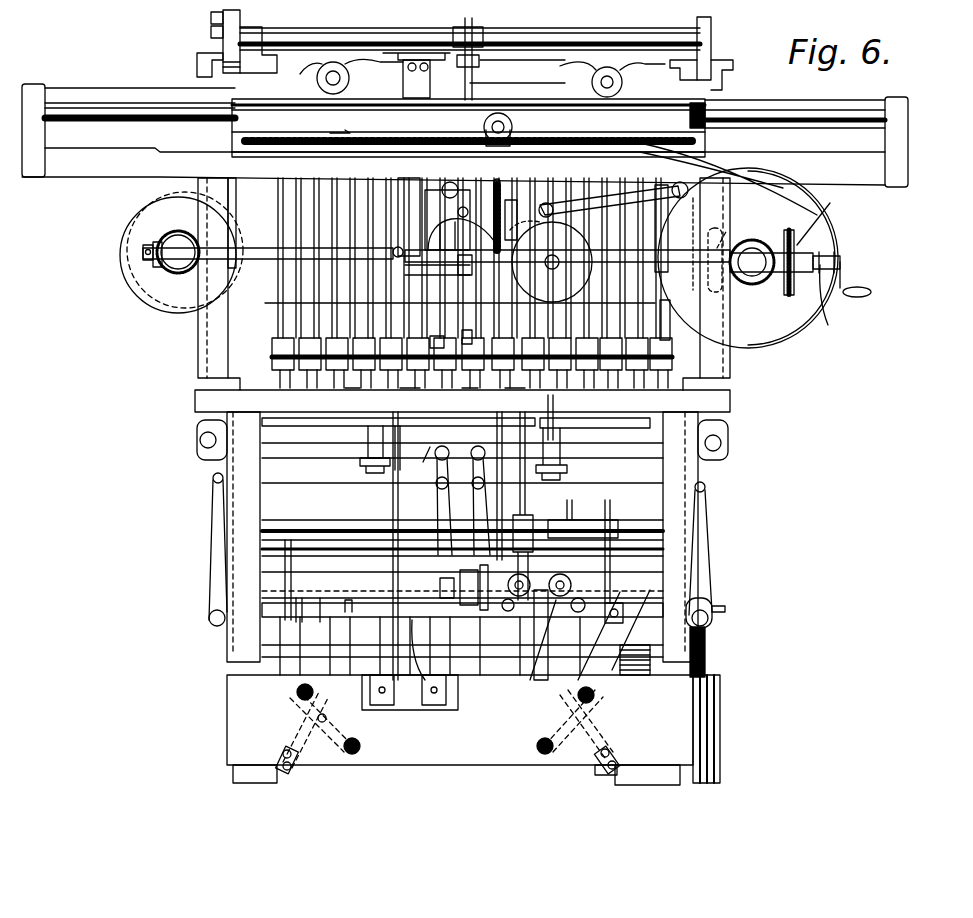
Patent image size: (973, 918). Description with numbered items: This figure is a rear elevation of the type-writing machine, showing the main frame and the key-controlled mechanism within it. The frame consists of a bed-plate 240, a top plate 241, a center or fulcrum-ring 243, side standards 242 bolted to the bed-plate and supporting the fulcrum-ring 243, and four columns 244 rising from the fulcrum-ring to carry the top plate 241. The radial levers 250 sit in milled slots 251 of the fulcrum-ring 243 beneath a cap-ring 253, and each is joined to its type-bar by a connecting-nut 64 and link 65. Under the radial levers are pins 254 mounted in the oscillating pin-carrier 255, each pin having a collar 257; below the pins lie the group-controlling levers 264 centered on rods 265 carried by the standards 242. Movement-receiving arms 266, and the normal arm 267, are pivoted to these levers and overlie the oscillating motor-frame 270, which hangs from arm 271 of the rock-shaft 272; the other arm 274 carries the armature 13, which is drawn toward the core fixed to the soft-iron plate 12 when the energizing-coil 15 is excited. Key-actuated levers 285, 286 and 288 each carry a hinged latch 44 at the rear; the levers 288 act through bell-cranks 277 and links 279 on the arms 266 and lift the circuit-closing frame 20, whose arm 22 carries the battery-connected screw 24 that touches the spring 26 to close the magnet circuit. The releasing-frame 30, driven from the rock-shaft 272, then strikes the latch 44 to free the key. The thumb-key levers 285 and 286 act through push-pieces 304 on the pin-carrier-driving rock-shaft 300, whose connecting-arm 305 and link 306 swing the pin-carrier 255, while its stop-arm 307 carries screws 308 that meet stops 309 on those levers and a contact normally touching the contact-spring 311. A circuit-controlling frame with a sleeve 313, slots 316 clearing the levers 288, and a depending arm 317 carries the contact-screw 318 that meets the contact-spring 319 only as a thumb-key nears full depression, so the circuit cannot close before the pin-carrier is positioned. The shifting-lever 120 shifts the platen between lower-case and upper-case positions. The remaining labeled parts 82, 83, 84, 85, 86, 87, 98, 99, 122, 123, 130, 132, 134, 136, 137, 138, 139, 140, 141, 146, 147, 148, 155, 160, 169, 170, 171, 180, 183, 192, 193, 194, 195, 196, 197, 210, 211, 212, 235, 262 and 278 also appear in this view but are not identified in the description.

The soft-iron plate 12 is at (722, 776).
The armature 13 is at (725, 610).
The energizing-coil 15 is at (706, 668).
The circuit-closing frame 20 is at (350, 604).
The arm 22 is at (308, 608).
The battery-connected screw 24 is at (295, 702).
The spring 26 is at (340, 727).
The releasing-frame 30 is at (293, 553).
The latch 44 is at (314, 692).
The connecting-nut 64 is at (272, 350).
The link 65 is at (302, 304).
The platen post 82 is at (226, 30).
The platen 83 is at (354, 30).
The bracket 84 is at (418, 52).
The carriage rail 85 is at (86, 102).
The rail end block 86 is at (36, 88).
The roller 87 is at (333, 71).
The post 98 is at (242, 20).
The clamp 99 is at (211, 17).
The shifting-lever 120 is at (465, 27).
The rod 122 is at (472, 88).
The rod 123 is at (488, 58).
The escapement frame 130 is at (450, 185).
The lever 132 is at (416, 200).
The roller 134 is at (472, 148).
The dog 136 is at (500, 210).
The rocker 137 is at (432, 214).
The wheel 138 is at (528, 263).
The carriage rail 139 is at (268, 116).
The rack 140 is at (318, 193).
The lever 141 is at (542, 202).
The pawl 146 is at (520, 238).
The block 147 is at (467, 262).
The bar 148 is at (448, 262).
The spring 155 is at (497, 186).
The post 160 is at (668, 340).
The wheel 169 is at (810, 340).
The band 170 is at (706, 160).
The block 171 is at (403, 86).
The wheel 180 is at (160, 308).
The dashed circle 183 is at (178, 190).
The bracket 192 is at (740, 228).
The gear 193 is at (786, 230).
The shaft 194 is at (264, 260).
The post 195 is at (238, 195).
The collar 196 is at (148, 258).
The arm 197 is at (706, 282).
The arm 210 is at (816, 220).
The gear 211 is at (778, 285).
The crank 212 is at (820, 300).
The gear 235 is at (178, 268).
The bed-plate 240 is at (246, 710).
The top plate 241 is at (56, 172).
The side standards 242 is at (240, 472).
The fulcrum-ring 243 is at (216, 400).
The columns 244 is at (210, 352).
The radial levers 250 is at (408, 390).
The milled slots 251 is at (466, 390).
The cap-ring 253 is at (436, 336).
The pins 254 is at (430, 447).
The pin-carrier 255 is at (552, 438).
The collars 257 is at (390, 430).
The pawl 262 is at (466, 330).
The group-controlling levers 264 is at (328, 446).
The rods 265 is at (200, 443).
The movement-receiving arms 266 is at (478, 500).
The movement-receiving arm 267 is at (440, 506).
The oscillating frame 270 is at (462, 575).
The arm 271 is at (456, 586).
The rock-shaft 272 is at (268, 578).
The arm 274 is at (623, 612).
The bell-crank 277 is at (212, 540).
The pivot 278 is at (212, 620).
The links 279 is at (298, 494).
The key-actuated lever 285 is at (500, 680).
The key-actuated lever 286 is at (540, 676).
The key-actuated levers 288 is at (368, 648).
The rock-shaft 300 is at (364, 520).
The push-pieces 304 is at (572, 500).
The connecting-arm 305 is at (526, 494).
The link 306 is at (556, 392).
The stop-arm 307 is at (556, 530).
The screws 308 is at (590, 584).
The stops 309 is at (580, 610).
The contact-spring 311 is at (600, 562).
The sleeve 313 is at (612, 522).
The slots 316 is at (650, 656).
The depending arm 317 is at (586, 674).
The contact-screw 318 is at (592, 705).
The contact-spring 319 is at (605, 740).